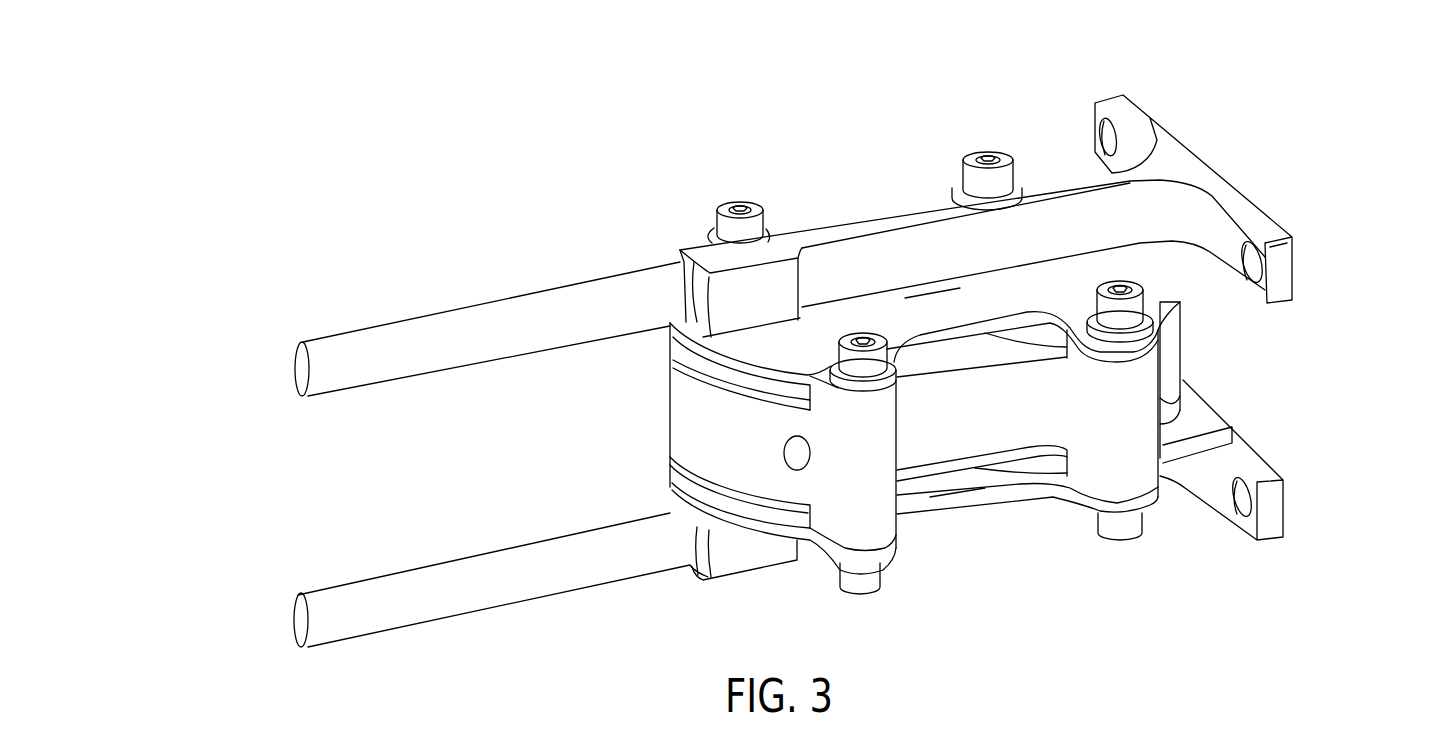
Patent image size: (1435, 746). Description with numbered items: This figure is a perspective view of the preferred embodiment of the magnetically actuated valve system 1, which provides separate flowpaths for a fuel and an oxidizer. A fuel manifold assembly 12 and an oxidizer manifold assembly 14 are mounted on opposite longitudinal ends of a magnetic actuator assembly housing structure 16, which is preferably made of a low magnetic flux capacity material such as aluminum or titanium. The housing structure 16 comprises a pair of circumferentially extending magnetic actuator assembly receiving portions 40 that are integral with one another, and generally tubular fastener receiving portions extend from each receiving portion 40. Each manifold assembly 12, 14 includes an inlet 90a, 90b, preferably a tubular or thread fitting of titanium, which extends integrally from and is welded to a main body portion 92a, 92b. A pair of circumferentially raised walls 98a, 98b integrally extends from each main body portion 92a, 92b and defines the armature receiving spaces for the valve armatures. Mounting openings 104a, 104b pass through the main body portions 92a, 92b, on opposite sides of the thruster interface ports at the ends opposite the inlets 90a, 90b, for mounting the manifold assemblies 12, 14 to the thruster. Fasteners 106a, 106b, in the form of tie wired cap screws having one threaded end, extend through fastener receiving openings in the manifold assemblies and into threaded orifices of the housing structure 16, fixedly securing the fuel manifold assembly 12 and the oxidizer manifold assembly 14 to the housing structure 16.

The clamp assembly 1 is at (1410, 152).
The fuel manifold assembly 12 is at (842, 225).
The oxidizer manifold assembly 14 is at (991, 508).
The magnetic actuator assembly housing structure 16 is at (1188, 358).
The magnetic actuator assembly receiving portion 40 is at (688, 417).
The inlet 90a is at (296, 372).
The inlet 90b is at (296, 628).
The main body portion 92a is at (940, 303).
The main body portion 92b is at (956, 497).
The circumferentially raised walls 98a is at (670, 357).
The circumferentially raised walls 98b is at (670, 487).
The mounting opening 104a is at (1106, 138).
The mounting opening 104b is at (1240, 520).
The fasteners 106a is at (988, 155).
The fasteners 106b is at (860, 593).